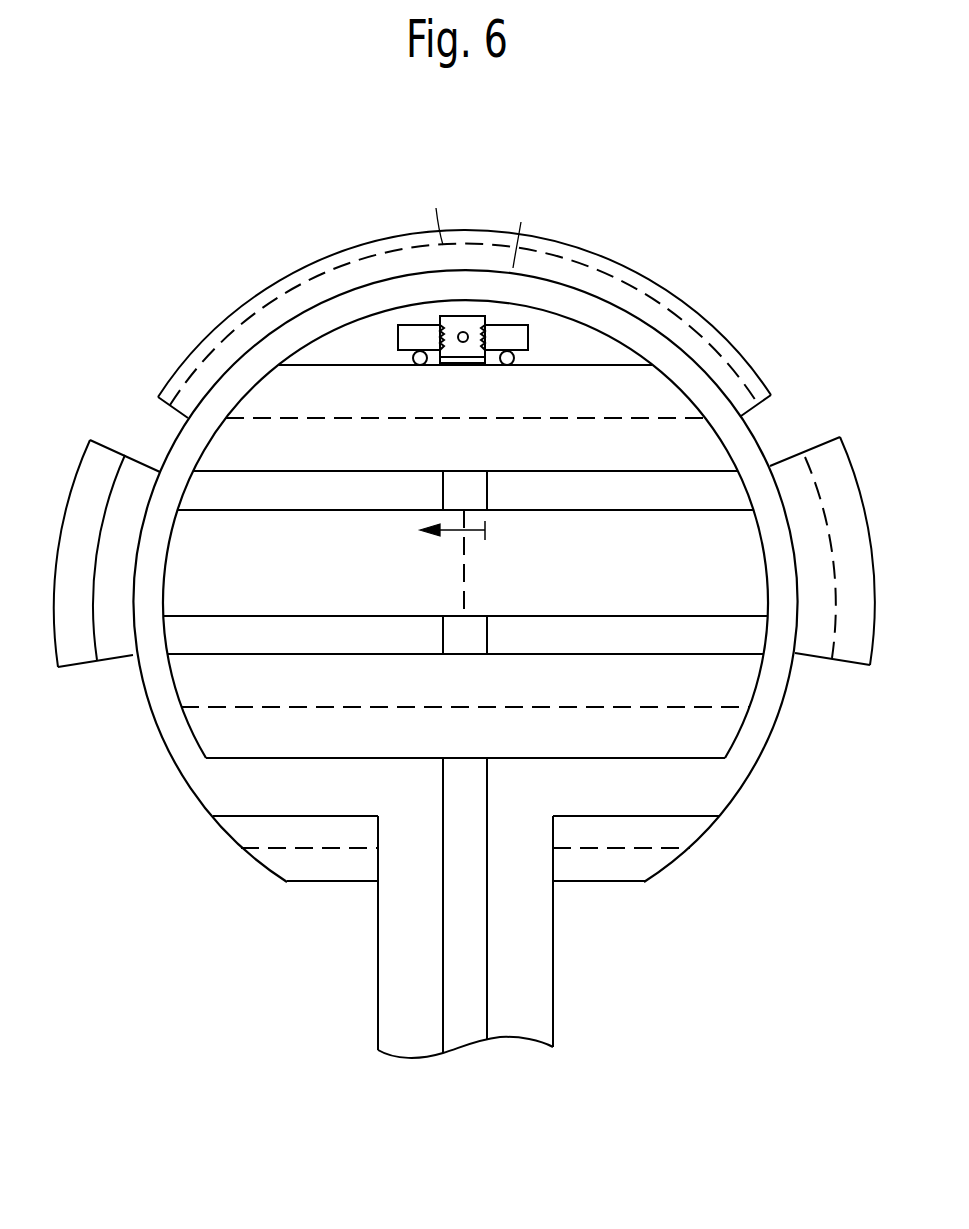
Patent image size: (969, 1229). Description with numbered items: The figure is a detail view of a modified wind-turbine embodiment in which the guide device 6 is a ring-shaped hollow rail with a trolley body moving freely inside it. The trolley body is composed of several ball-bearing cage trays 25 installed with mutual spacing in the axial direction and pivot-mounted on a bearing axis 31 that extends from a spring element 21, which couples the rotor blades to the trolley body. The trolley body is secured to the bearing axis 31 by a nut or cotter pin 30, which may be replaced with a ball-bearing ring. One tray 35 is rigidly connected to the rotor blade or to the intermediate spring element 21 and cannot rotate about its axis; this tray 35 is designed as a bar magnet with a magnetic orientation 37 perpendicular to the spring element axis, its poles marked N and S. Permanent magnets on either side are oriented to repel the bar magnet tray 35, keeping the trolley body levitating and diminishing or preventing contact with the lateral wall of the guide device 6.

The guide device 6 is at (785, 698).
The spring element 21 is at (466, 1033).
The ball-bearing cage trays 25 is at (708, 452).
The nut or cotter pin 30 is at (528, 345).
The bearing axis 31 is at (452, 491).
The tray 35 is at (747, 596).
The magnetic orientation 37 is at (473, 532).